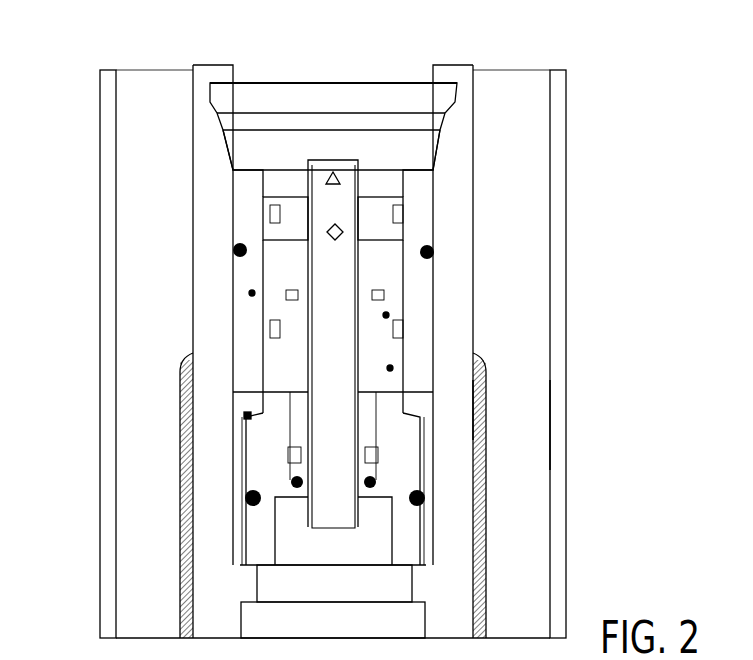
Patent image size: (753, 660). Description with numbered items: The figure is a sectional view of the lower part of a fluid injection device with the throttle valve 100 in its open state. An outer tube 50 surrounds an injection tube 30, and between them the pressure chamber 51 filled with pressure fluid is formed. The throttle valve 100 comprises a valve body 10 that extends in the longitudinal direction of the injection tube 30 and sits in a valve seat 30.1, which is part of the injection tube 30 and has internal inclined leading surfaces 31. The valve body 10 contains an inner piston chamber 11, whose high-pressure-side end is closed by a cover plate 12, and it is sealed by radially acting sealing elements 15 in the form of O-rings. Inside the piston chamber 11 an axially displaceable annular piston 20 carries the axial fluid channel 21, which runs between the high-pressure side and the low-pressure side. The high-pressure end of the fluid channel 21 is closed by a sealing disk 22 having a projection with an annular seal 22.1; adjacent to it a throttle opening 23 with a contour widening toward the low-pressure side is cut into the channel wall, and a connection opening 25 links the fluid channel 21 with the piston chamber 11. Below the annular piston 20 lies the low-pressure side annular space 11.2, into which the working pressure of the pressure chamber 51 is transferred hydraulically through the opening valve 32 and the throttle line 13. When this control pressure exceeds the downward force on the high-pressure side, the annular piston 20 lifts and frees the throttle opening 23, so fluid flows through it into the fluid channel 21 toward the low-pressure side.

The throttle valve 100 is at (177, 71).
The valve body 10 is at (252, 293).
The piston chamber 11 is at (392, 367).
The low-pressure side annular space 11.2 is at (305, 365).
The cover plate 12 is at (383, 195).
The throttle line 13 is at (247, 415).
The sealing elements 15 is at (432, 252).
The annular piston 20 is at (388, 315).
The fluid channel 21 is at (344, 387).
The sealing disk 22 is at (358, 147).
The annular seal 22.1 is at (306, 154).
The throttle opening 23 is at (330, 183).
The connection opening 25 is at (343, 232).
The injection tube 30 is at (470, 93).
The valve seat 30.1 is at (462, 405).
The internal inclined leading surfaces 31 is at (430, 454).
The opening valve 32 is at (188, 390).
The outer tube 50 is at (556, 160).
The pressure chamber 51 is at (535, 428).